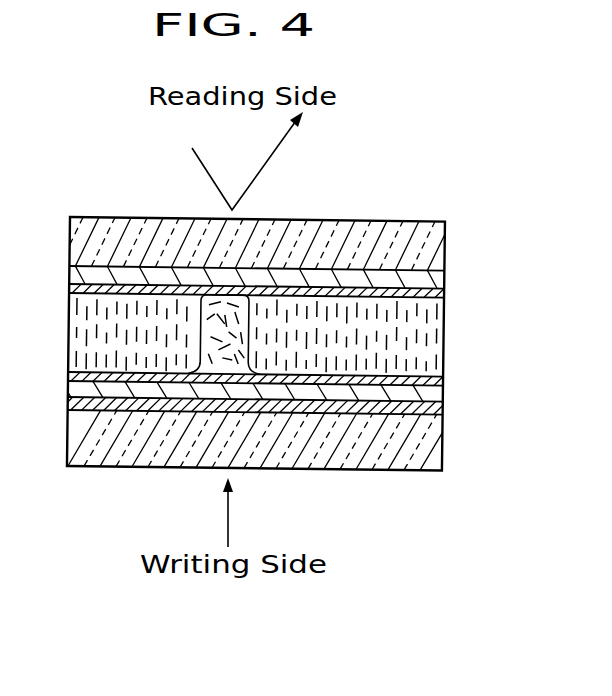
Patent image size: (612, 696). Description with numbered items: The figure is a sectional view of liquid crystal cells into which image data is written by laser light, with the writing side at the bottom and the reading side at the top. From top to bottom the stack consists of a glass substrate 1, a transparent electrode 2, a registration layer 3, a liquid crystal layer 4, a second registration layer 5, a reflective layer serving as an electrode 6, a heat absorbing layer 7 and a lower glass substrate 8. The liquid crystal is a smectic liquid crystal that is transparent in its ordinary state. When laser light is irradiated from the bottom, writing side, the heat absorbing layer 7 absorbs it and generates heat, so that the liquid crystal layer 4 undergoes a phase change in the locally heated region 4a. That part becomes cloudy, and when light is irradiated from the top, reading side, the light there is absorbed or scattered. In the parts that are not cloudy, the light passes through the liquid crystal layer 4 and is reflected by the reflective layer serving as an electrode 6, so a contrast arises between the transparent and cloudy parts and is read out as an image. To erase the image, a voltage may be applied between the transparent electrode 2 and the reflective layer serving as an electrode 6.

The glass substrate 1 is at (445, 243).
The transparent electrode 2 is at (445, 277).
The registration layer 3 is at (445, 292).
The liquid crystal layer 4 is at (445, 338).
The phase change 4a is at (217, 357).
The registration layer 5 is at (445, 377).
The reflective layer serving as an electrode 6 is at (445, 390).
The heat absorbing layer 7 is at (445, 410).
The glass substrate 8 is at (445, 443).